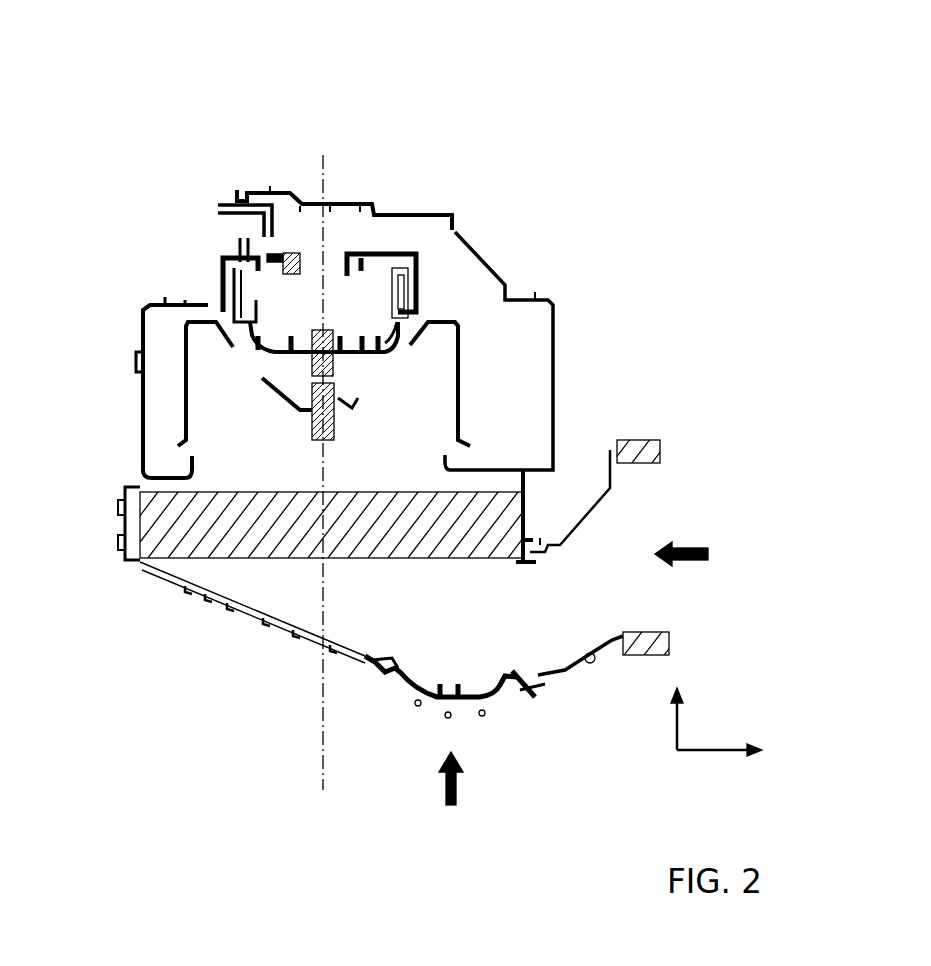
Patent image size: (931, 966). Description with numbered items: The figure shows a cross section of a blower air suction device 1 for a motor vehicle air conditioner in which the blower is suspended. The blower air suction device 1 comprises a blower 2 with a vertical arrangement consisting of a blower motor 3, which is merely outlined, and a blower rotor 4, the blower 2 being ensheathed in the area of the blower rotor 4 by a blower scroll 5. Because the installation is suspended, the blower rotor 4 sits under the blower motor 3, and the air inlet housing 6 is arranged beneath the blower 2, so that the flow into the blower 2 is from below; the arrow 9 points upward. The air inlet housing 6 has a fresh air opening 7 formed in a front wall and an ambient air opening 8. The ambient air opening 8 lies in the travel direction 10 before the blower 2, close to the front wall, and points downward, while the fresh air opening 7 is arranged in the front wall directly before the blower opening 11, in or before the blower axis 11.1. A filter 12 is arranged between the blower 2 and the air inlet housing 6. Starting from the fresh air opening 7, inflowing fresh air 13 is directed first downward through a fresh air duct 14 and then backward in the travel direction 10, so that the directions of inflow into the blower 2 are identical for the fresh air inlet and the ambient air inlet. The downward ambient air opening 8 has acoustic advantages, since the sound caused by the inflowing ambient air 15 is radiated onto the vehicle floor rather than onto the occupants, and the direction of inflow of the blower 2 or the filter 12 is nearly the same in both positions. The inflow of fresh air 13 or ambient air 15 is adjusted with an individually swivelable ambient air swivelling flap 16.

The blower air suction device 1 is at (215, 125).
The blower 2 is at (433, 224).
The blower motor 3 is at (330, 315).
The blower rotor 4 is at (460, 382).
The blower scroll 5 is at (150, 303).
The air inlet housing 6 is at (283, 612).
The fresh air opening 7 is at (675, 518).
The ambient air opening 8 is at (438, 712).
The arrow 9 is at (672, 720).
The travel direction 10 is at (703, 752).
The blower opening 11 is at (263, 462).
The blower axis 11.1 is at (327, 178).
The filter 12 is at (450, 547).
The inflowing fresh air 13 is at (693, 565).
The fresh air duct 14 is at (615, 543).
The inflowing ambient air 15 is at (440, 783).
The ambient air swivelling flap 16 is at (388, 665).